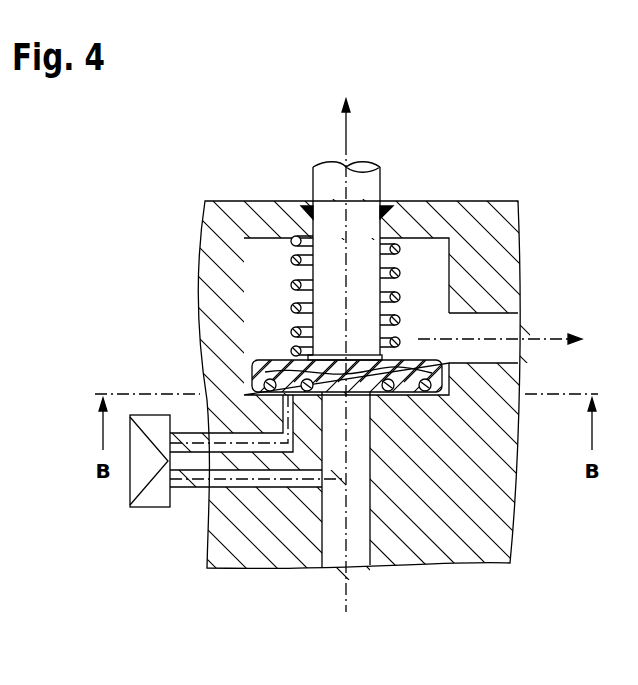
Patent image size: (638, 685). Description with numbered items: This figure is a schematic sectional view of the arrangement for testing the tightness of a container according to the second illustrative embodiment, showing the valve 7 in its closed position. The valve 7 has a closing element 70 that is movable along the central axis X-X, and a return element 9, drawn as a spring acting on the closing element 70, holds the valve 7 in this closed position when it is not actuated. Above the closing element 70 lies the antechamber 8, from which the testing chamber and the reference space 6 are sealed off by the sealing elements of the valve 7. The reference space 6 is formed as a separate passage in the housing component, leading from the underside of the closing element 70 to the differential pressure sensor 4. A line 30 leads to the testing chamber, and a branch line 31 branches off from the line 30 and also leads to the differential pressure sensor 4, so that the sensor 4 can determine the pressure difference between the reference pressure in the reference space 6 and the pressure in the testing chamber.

The differential pressure sensor 4 is at (152, 497).
The reference space 6 is at (250, 447).
The valve 7 is at (174, 323).
The antechamber 8 is at (427, 257).
The return element 9 is at (400, 293).
The line 30 is at (357, 550).
The branch line 31 is at (287, 483).
The closing element 70 is at (257, 368).